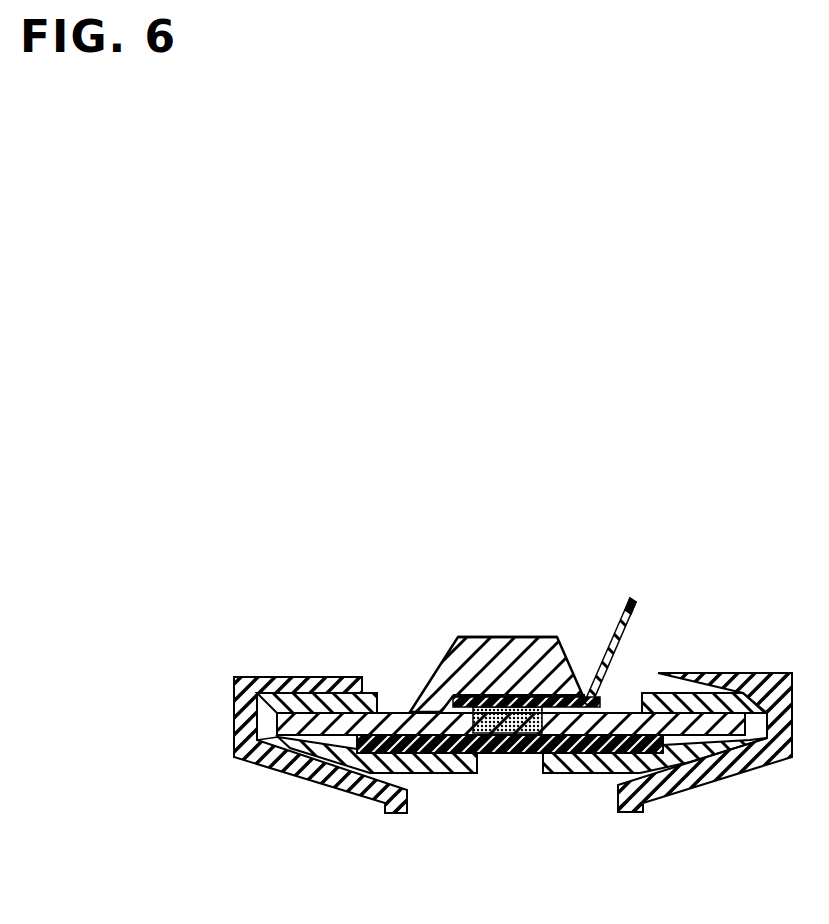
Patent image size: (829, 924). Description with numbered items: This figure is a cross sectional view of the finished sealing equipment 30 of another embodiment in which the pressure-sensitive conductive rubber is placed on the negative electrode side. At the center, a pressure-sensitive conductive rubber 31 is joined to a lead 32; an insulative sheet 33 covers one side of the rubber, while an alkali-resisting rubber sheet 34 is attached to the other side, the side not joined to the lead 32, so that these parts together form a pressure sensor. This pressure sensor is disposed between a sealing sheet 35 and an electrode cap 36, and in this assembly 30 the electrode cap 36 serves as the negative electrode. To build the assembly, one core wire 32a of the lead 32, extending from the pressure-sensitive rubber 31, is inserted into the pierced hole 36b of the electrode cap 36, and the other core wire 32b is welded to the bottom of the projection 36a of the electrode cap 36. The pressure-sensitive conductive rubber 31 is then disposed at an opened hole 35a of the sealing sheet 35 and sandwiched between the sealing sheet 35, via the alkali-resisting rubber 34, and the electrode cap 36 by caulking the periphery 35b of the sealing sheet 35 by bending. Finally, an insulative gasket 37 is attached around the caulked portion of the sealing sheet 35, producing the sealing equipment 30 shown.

The sealing equipment 30 is at (474, 590).
The pressure-sensitive conductive rubber 31 is at (482, 757).
The lead 32 is at (632, 618).
The core wire 32a is at (687, 576).
The core wire 32b is at (460, 700).
The insulative sheet 33 is at (567, 757).
The alkali-resisting rubber sheet 34 is at (441, 768).
The sealing sheet 35 is at (611, 762).
The opened hole 35a is at (514, 762).
The periphery 35b is at (305, 712).
The electrode cap 36 is at (425, 693).
The projection 36a is at (521, 650).
The pierced hole 36b is at (600, 703).
The insulative gasket 37 is at (292, 767).